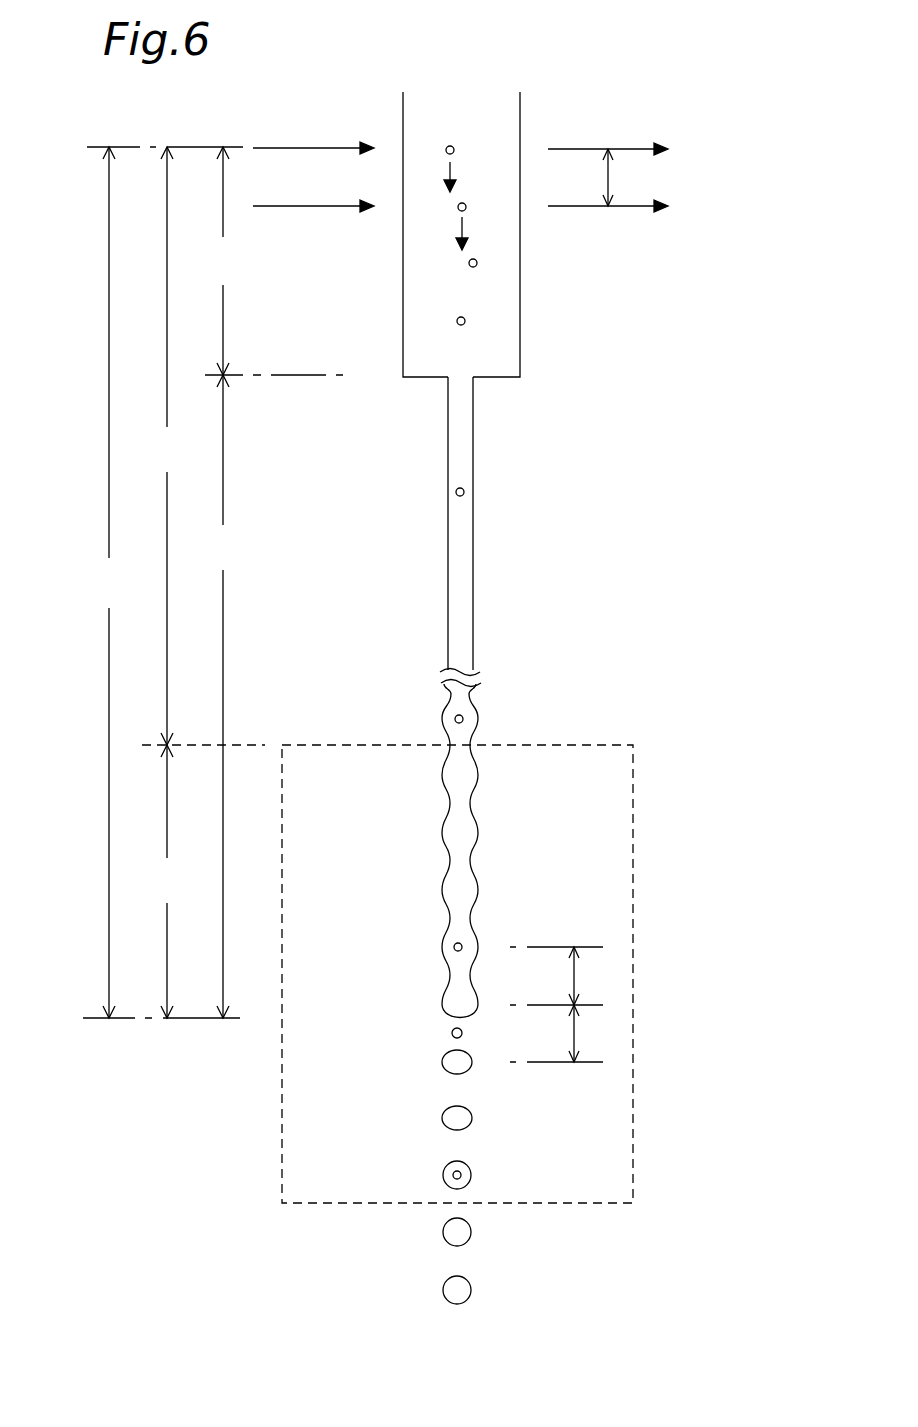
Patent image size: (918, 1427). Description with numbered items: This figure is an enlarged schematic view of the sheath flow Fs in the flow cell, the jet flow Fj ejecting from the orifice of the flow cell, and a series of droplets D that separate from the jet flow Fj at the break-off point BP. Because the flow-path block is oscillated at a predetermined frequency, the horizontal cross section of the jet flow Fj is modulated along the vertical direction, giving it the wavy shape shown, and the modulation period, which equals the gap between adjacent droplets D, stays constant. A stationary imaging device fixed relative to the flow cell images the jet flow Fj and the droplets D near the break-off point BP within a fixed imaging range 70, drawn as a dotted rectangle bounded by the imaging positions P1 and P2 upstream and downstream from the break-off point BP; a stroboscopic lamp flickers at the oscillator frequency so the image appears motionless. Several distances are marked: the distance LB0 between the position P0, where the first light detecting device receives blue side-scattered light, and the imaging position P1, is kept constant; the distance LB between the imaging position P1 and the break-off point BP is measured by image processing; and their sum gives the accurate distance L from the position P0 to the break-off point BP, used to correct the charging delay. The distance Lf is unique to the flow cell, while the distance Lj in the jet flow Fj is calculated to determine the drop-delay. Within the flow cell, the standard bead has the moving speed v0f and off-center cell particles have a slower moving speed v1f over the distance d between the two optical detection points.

The imaging range 70 is at (633, 810).
The sheath flow Fs is at (508, 316).
The jet flow Fj is at (473, 544).
The droplet D is at (443, 1066).
The position P0 is at (140, 151).
The imaging position P1 is at (578, 745).
The imaging position P2 is at (570, 1204).
The break-off point BP is at (135, 1019).
The distance L is at (107, 582).
The distance Lf is at (222, 261).
The distance LB0 is at (163, 446).
The distance LB is at (161, 881).
The distance Lj is at (222, 696).
The distance d is at (608, 177).
The moving speed v1f is at (466, 179).
The moving speed v0f is at (478, 235).